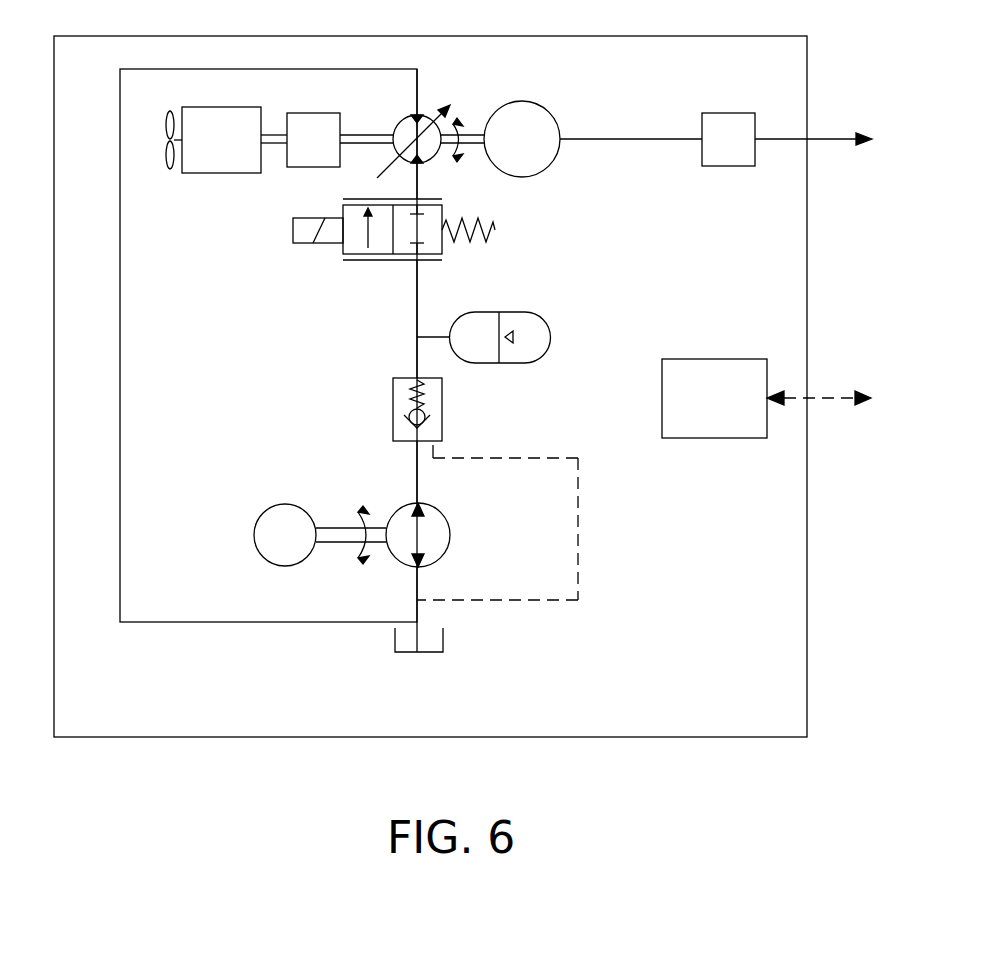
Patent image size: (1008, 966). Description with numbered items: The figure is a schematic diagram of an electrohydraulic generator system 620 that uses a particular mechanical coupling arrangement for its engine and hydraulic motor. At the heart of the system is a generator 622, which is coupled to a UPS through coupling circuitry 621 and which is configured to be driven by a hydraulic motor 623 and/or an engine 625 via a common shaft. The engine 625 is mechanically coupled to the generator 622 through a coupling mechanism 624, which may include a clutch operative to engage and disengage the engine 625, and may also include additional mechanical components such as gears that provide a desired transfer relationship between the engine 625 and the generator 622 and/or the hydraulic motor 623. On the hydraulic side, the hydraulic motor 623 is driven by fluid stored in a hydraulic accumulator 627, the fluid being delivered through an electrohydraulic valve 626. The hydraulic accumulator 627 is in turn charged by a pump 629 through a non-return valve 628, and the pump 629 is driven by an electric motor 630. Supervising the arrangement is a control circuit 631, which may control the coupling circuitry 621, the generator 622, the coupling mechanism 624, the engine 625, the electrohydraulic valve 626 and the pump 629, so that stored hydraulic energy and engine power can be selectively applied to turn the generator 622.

The electrohydraulic generator system 620 is at (430, 36).
The coupling circuitry 621 is at (728, 113).
The generator 622 is at (522, 101).
The hydraulic motor 623 is at (430, 160).
The coupling mechanism 624 is at (313, 113).
The engine 625 is at (220, 107).
The electrohydraulic valve 626 is at (290, 230).
The hydraulic accumulator 627 is at (518, 312).
The non-return valve 628 is at (393, 412).
The pump 629 is at (450, 538).
The electric motor 630 is at (285, 504).
The control circuit 631 is at (714, 359).